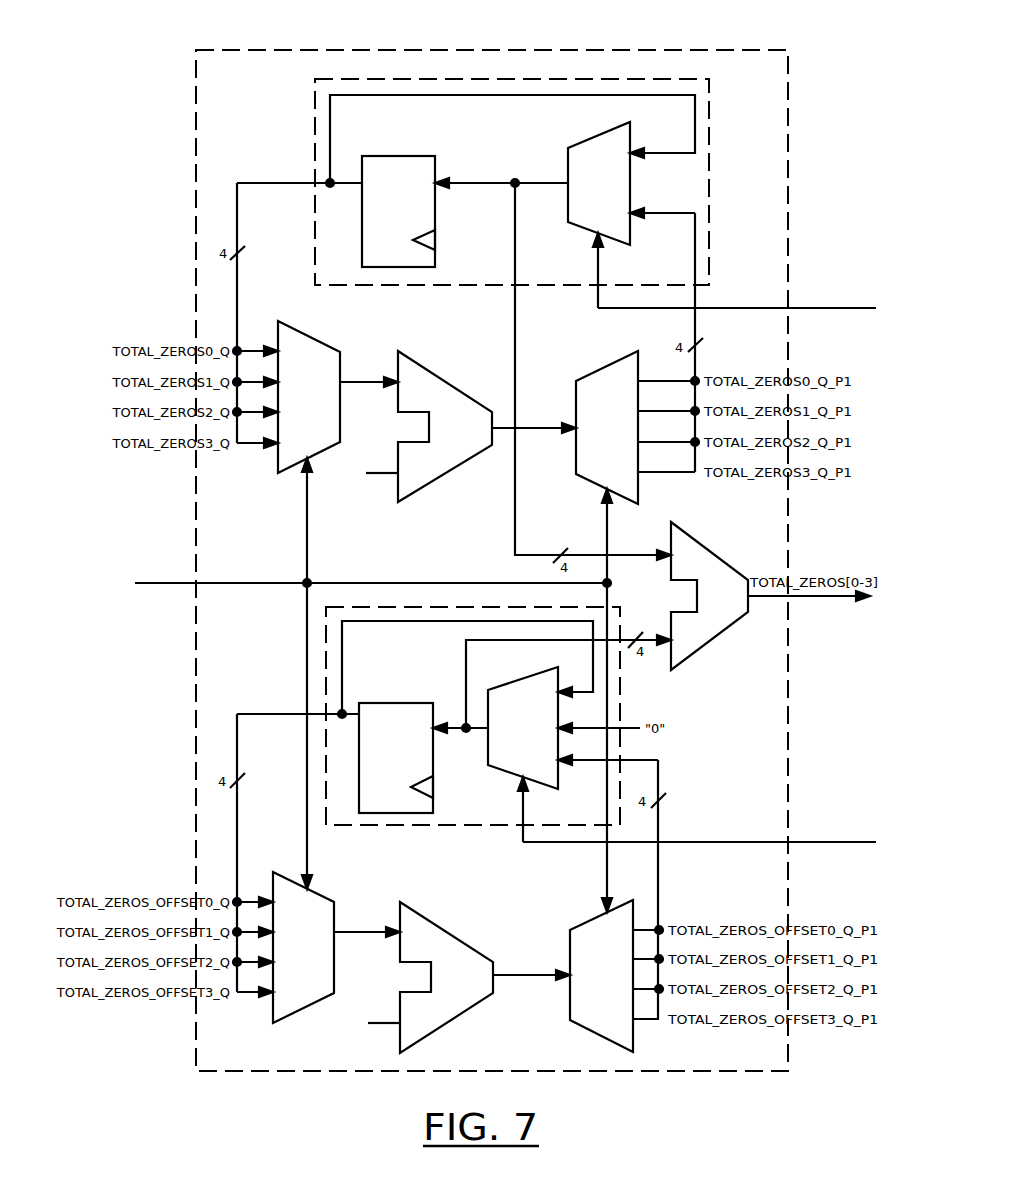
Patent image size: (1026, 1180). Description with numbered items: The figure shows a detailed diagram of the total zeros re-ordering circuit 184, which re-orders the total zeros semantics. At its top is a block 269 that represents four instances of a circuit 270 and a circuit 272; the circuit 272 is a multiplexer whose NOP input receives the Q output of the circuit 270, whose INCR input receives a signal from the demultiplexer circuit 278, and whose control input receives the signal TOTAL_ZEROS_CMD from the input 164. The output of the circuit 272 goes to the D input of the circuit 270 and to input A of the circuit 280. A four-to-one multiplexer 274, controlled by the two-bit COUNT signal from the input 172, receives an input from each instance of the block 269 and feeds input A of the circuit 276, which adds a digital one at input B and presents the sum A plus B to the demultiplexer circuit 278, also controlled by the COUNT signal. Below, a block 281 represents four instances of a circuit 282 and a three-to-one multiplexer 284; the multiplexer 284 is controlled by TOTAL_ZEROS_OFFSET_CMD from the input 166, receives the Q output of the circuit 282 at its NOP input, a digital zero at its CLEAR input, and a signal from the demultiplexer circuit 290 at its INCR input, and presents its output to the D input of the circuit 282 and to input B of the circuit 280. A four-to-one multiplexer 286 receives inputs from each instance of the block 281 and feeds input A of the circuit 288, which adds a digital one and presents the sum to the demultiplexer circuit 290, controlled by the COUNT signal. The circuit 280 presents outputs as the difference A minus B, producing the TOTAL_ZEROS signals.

The total zeros re-ordering circuit 184 is at (160, 28).
The block 269 is at (355, 78).
The circuit 270 is at (405, 156).
The circuit 272 is at (606, 133).
The multiplexer 274 is at (308, 333).
The circuit 276 is at (427, 365).
The demultiplexer circuit 278 is at (612, 360).
The circuit 280 is at (703, 540).
The block 281 is at (393, 826).
The circuit 282 is at (393, 703).
The multiplexer 284 is at (502, 771).
The multiplexer 286 is at (316, 889).
The circuit 288 is at (437, 915).
The demultiplexer circuit 290 is at (592, 917).
The input 164 is at (788, 308).
The input 166 is at (788, 842).
The input 172 is at (190, 586).